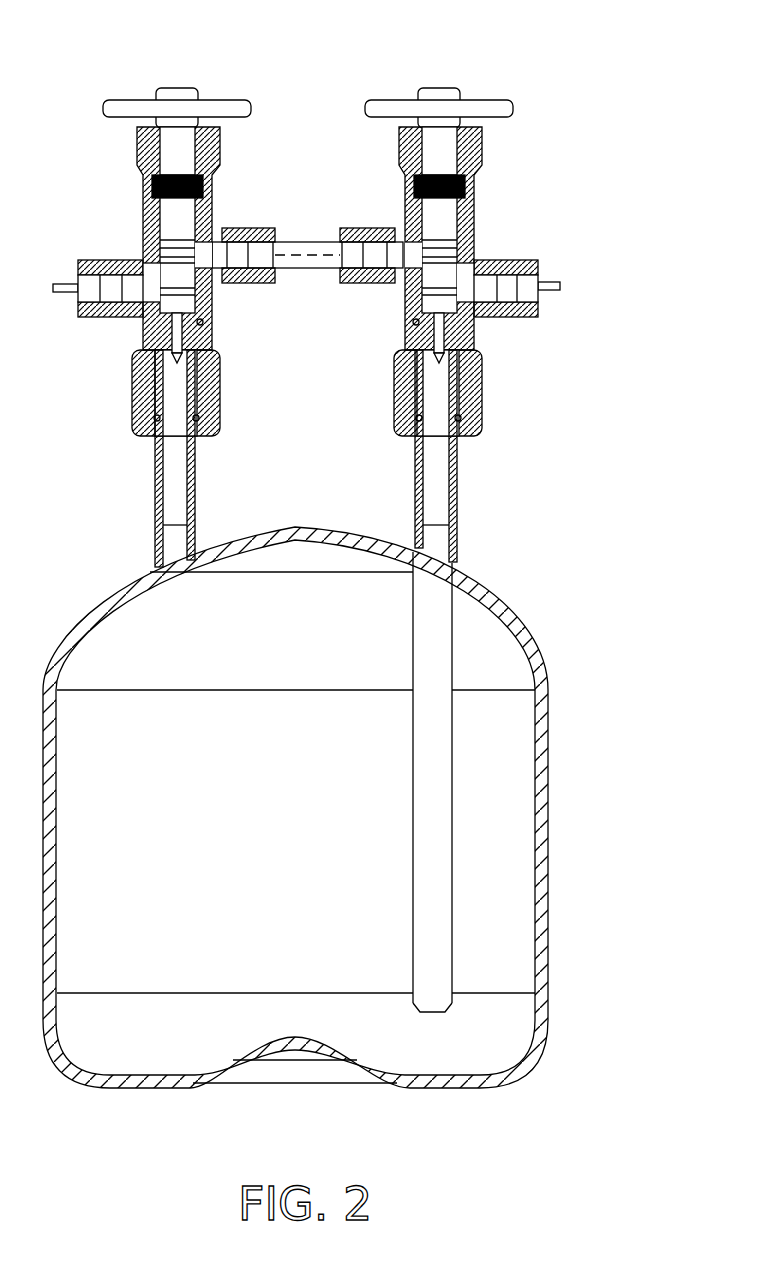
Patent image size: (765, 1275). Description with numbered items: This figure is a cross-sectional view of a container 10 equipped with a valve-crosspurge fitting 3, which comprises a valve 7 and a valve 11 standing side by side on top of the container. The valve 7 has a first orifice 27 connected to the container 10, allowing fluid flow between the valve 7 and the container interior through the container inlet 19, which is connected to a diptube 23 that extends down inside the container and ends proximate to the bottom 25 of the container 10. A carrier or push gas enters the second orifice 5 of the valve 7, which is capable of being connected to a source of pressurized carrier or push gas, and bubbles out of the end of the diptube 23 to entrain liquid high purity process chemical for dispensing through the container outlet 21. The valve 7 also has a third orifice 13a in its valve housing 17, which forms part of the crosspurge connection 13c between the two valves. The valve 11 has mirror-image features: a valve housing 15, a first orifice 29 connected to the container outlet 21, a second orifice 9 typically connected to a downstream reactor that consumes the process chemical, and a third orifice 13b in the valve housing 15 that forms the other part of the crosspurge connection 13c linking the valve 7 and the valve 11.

The valve-crosspurge fitting 3 is at (317, 188).
The second orifice 5 is at (538, 292).
The valve 7 is at (420, 176).
The second orifice 9 is at (78, 290).
The container 10 is at (333, 829).
The valve 11 is at (156, 177).
The third orifice 13a is at (340, 232).
The third orifice 13b is at (290, 228).
The crosspurge connection 13c is at (305, 268).
The valve housing 15 is at (143, 192).
The valve housing 17 is at (404, 190).
The container inlet 19 is at (458, 512).
The container outlet 21 is at (157, 492).
The diptube 23 is at (412, 848).
The bottom 25 is at (507, 1080).
The first orifice 27 is at (470, 447).
The first orifice 29 is at (150, 452).